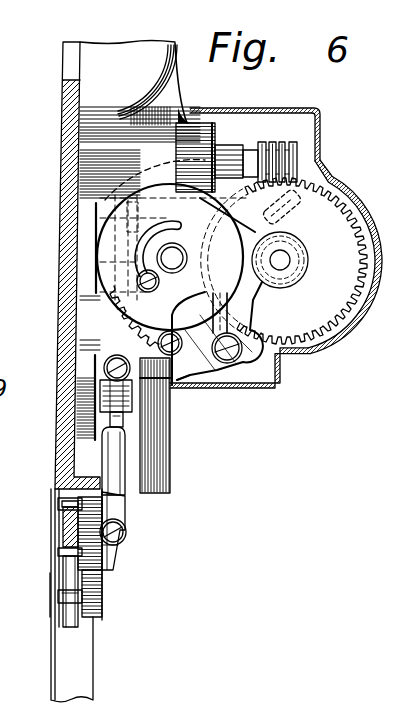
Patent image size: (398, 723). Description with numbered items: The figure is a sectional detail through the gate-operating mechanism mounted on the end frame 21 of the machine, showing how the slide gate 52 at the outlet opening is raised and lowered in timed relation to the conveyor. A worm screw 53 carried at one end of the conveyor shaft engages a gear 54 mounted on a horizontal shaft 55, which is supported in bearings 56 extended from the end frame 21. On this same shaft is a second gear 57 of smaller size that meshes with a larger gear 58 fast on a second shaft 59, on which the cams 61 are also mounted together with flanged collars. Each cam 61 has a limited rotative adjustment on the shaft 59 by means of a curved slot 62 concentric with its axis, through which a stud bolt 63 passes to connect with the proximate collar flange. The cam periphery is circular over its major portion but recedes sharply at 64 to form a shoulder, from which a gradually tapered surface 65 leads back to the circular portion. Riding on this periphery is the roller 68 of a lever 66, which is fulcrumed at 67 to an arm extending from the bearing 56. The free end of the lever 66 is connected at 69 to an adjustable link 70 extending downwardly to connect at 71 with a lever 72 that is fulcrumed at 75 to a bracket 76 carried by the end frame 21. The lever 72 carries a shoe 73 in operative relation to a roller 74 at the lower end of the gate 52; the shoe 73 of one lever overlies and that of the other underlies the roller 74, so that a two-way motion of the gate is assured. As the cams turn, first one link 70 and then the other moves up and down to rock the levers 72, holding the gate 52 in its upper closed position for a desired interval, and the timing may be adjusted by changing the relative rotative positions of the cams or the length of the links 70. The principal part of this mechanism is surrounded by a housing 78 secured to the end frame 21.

The end frame 21 is at (52, 467).
The slide gate 52 is at (50, 573).
The worm screw 53 is at (292, 148).
The gear 54 is at (347, 312).
The horizontal shaft 55 is at (290, 260).
The bearings 56 is at (303, 351).
The second gear 57 is at (300, 280).
The larger gear 58 is at (106, 298).
The second shaft 59 is at (137, 282).
The cam 61 is at (137, 250).
The curved slot 62 is at (157, 258).
The stud bolt 63 is at (158, 342).
The receding portion 64 is at (195, 368).
The tapered surface 65 is at (283, 355).
The lever 66 is at (229, 180).
The fulcrum 67 is at (340, 181).
The roller 68 is at (168, 157).
The connection 69 is at (62, 135).
The adjustable link 70 is at (62, 210).
The connection 71 is at (121, 553).
The lever 72 is at (58, 501).
The shoe 73 is at (63, 512).
The roller 74 is at (58, 594).
The fulcrum 75 is at (127, 517).
The bracket 76 is at (104, 610).
The housing 78 is at (275, 104).